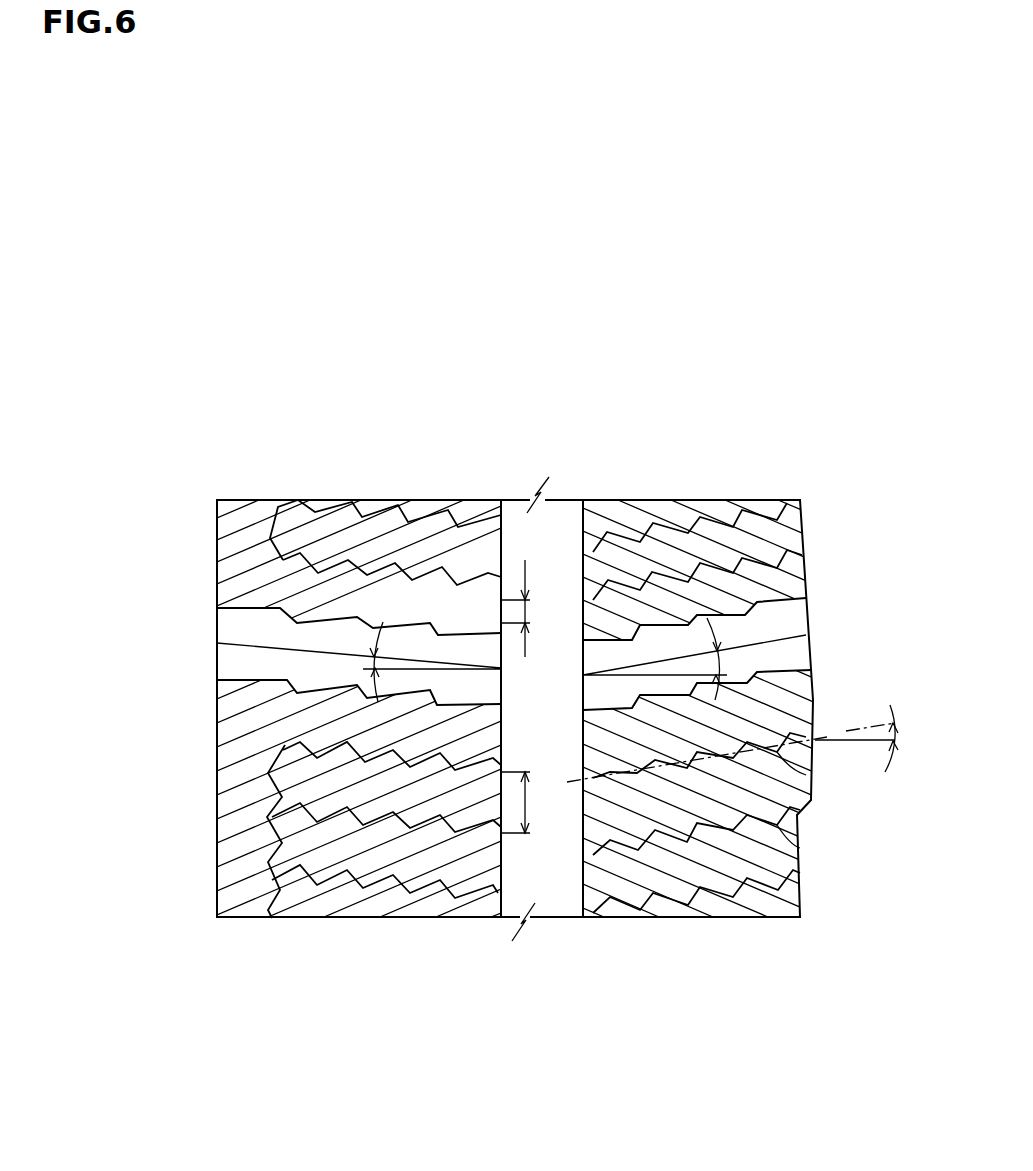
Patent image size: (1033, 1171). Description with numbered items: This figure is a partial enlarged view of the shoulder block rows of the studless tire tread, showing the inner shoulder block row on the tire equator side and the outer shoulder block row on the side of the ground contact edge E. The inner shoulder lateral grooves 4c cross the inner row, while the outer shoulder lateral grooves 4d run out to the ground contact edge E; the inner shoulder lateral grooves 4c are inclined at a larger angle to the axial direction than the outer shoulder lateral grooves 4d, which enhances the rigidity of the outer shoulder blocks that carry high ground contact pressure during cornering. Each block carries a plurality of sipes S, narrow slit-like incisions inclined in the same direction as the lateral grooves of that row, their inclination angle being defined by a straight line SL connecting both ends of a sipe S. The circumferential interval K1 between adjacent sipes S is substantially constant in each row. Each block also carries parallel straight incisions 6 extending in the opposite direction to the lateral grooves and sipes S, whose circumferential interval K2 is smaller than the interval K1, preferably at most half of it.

The incisions 6 is at (232, 510).
The outer shoulder lateral grooves 4d is at (232, 632).
The inner shoulder lateral grooves 4c is at (783, 617).
The ground contact edge E is at (217, 755).
The sipes S is at (390, 827).
The straight line SL is at (847, 727).
The interval of the sipes K1 is at (536, 802).
The interval of the incisions K2 is at (537, 608).